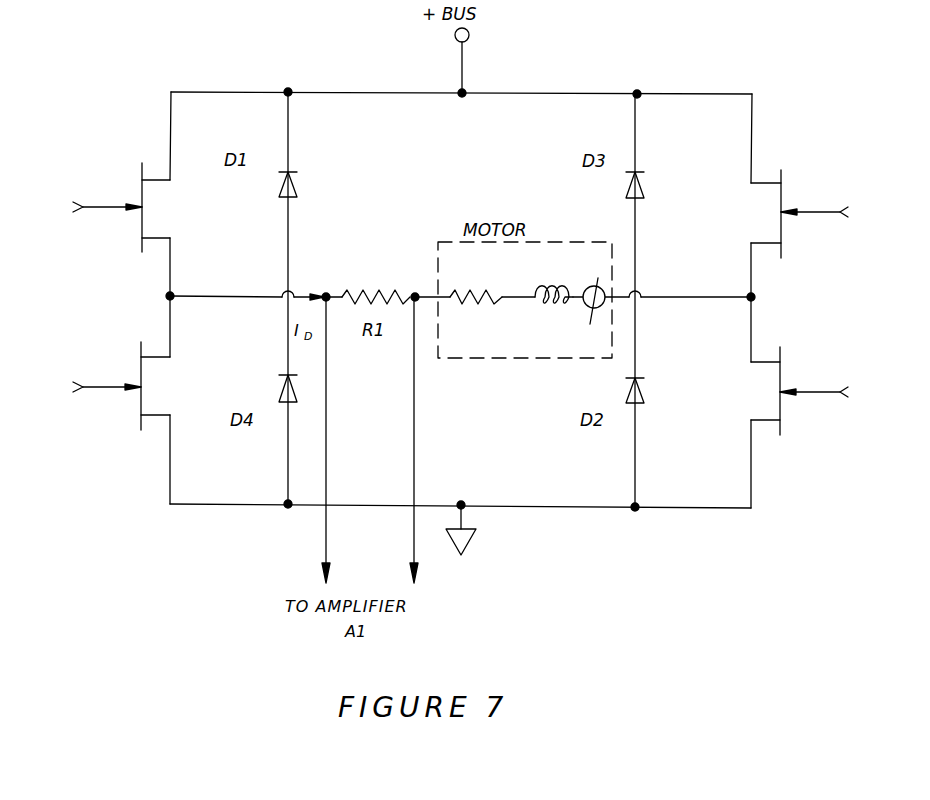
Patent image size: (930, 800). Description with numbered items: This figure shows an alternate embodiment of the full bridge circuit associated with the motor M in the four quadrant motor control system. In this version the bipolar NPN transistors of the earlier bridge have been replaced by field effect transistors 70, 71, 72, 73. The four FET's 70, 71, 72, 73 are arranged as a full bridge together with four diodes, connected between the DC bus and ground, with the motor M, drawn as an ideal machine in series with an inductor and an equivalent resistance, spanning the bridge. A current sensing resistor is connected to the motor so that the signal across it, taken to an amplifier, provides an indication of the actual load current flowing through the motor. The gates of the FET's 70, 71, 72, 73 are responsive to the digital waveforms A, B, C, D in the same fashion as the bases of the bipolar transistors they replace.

The field effect transistor 70 is at (141, 200).
The field effect transistor 71 is at (782, 397).
The field effect transistor 72 is at (784, 193).
The field effect transistor 73 is at (140, 413).